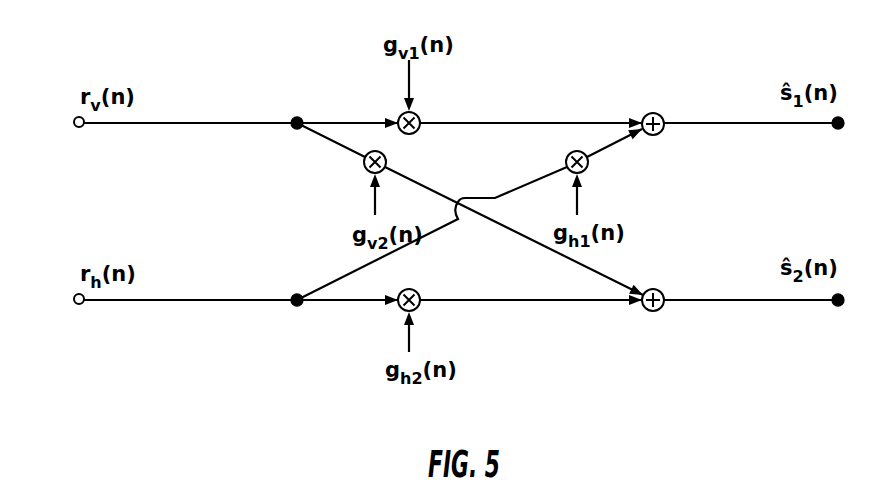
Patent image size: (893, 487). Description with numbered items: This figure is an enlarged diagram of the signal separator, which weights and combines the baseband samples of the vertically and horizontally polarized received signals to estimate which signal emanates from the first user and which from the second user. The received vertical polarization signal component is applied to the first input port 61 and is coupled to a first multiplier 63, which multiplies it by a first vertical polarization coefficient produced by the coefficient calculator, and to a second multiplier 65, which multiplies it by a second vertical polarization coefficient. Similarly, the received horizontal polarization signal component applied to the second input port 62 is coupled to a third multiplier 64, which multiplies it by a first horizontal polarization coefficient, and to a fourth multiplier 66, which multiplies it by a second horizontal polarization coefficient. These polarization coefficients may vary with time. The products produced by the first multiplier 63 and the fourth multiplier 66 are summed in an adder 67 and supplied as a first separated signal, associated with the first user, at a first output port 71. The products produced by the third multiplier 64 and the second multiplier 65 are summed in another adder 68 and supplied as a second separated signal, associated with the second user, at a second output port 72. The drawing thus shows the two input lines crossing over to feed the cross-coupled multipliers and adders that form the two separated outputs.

The first input port 61 is at (74, 118).
The second input port 62 is at (82, 305).
The first multiplier 63 is at (417, 132).
The third multiplier 64 is at (418, 291).
The second multiplier 65 is at (364, 165).
The fourth multiplier 66 is at (567, 153).
The adder 67 is at (659, 114).
The adder 68 is at (656, 312).
The first output port 71 is at (838, 130).
The second output port 72 is at (838, 307).